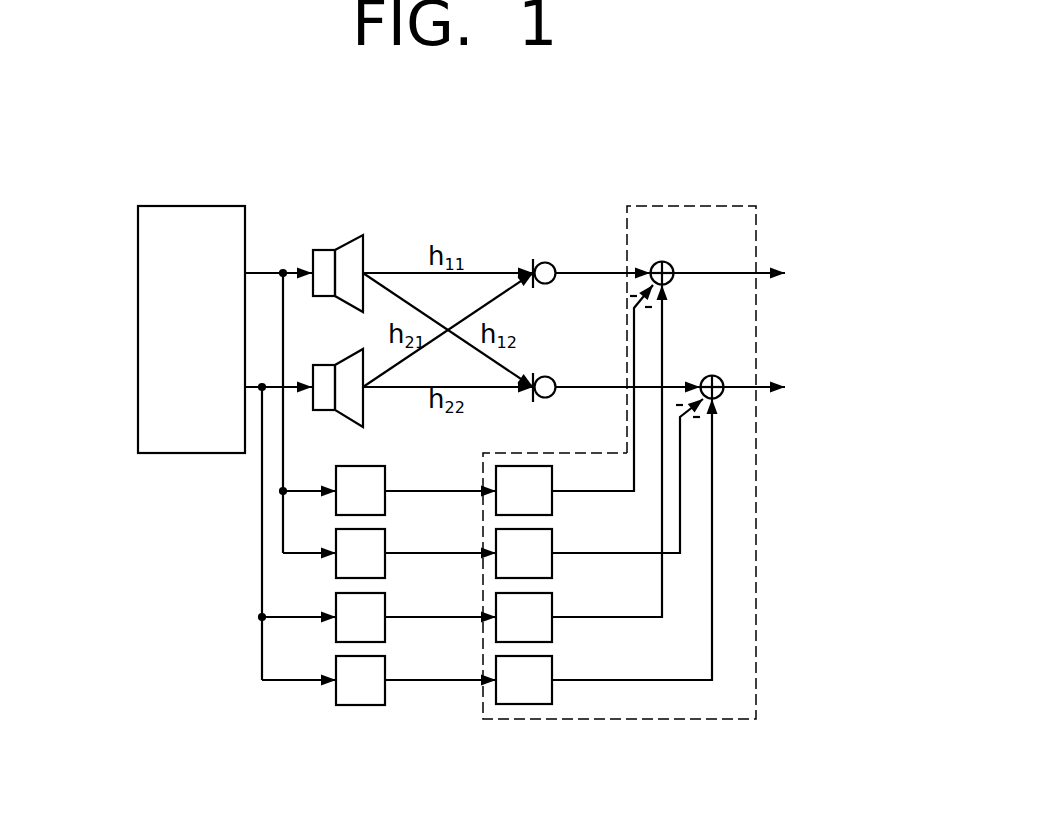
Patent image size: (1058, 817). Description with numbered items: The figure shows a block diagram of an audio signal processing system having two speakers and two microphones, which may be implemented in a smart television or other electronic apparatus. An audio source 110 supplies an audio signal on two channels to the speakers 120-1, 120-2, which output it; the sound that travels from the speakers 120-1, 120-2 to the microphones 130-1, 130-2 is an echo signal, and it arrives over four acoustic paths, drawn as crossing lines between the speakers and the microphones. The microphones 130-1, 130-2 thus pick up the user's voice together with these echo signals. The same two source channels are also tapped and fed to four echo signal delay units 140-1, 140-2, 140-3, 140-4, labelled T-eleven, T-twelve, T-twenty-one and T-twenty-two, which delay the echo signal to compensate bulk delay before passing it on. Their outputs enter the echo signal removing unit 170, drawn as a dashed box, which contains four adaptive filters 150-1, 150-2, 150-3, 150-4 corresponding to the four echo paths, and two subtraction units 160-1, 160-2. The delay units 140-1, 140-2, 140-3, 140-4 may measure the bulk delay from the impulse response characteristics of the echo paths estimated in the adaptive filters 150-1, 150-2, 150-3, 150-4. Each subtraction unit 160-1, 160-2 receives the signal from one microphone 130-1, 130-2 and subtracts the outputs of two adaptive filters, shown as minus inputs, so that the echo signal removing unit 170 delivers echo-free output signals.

The audio source 110 is at (138, 268).
The speaker 120-1 is at (349, 236).
The speaker 120-2 is at (349, 350).
The microphone 130-1 is at (550, 262).
The microphone 130-2 is at (550, 376).
The echo signal delay unit 140-1 is at (386, 502).
The echo signal delay unit 140-2 is at (386, 565).
The echo signal delay unit 140-3 is at (386, 629).
The echo signal delay unit 140-4 is at (386, 692).
The adaptive filter 150-1 is at (553, 502).
The adaptive filter 150-2 is at (553, 565).
The adaptive filter 150-3 is at (553, 629).
The adaptive filter 150-4 is at (553, 692).
The subtraction unit 160-1 is at (679, 242).
The subtraction unit 160-2 is at (729, 355).
The echo signal removing unit 170 is at (757, 630).